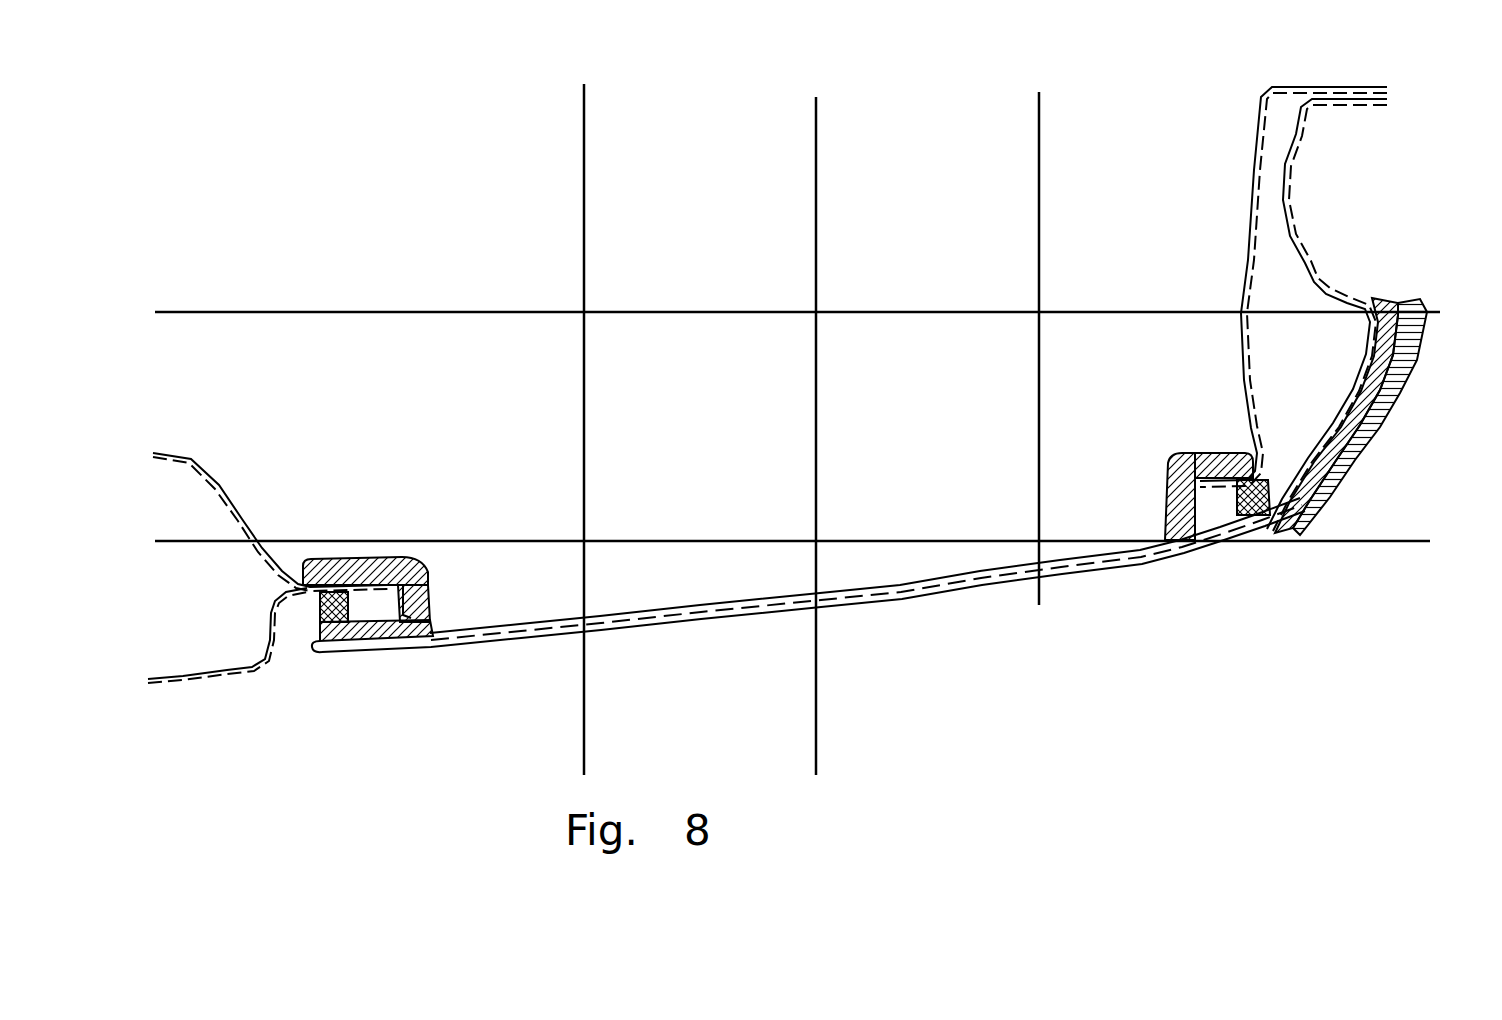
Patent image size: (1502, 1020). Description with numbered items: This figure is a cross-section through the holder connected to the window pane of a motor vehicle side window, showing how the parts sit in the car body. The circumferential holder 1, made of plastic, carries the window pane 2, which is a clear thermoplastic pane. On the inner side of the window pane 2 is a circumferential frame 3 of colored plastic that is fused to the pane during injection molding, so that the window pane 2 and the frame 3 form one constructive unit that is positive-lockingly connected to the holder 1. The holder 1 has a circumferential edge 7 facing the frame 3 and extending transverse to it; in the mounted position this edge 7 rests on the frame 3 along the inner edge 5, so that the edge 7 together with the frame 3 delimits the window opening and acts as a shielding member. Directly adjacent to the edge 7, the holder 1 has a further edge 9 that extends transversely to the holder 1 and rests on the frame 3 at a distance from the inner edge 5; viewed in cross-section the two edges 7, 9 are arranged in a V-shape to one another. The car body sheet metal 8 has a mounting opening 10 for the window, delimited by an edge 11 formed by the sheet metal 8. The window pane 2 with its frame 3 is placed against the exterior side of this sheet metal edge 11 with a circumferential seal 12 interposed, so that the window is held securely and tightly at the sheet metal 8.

The holder 1 is at (358, 548).
The window pane 2 is at (732, 608).
The frame 3 is at (323, 650).
The inner edge 5 is at (430, 628).
The edge 7 is at (423, 607).
The sheet metal 8 is at (203, 680).
The edge 9 is at (403, 610).
The mounting opening 10 is at (664, 583).
The edge 11 is at (310, 582).
The seal 12 is at (1250, 495).